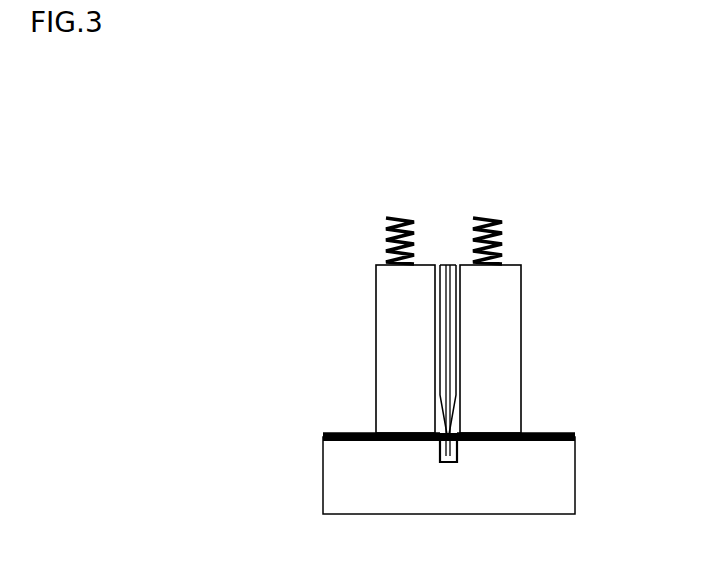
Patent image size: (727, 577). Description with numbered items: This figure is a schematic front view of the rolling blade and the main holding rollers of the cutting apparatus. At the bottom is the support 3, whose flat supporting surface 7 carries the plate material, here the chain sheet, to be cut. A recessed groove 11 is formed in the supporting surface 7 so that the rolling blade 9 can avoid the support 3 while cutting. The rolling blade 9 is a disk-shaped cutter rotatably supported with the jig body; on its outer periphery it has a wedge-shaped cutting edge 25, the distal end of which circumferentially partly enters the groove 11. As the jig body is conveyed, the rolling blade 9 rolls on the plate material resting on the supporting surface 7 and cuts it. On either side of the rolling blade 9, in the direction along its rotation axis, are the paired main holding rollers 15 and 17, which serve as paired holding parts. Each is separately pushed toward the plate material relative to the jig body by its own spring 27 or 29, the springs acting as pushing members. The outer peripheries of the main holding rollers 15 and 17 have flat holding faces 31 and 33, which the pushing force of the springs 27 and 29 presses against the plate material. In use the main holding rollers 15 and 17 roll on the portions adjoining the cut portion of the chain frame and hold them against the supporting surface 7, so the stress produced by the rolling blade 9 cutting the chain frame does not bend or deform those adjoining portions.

The support 3 is at (558, 468).
The supporting surface 7 is at (327, 432).
The rolling blade 9 is at (447, 265).
The groove 11 is at (447, 463).
The main holding roller 15 is at (400, 316).
The main holding roller 17 is at (498, 301).
The cutting edge 25 is at (457, 415).
The spring 27 is at (399, 217).
The spring 29 is at (500, 217).
The holding face 31 is at (383, 441).
The holding face 33 is at (493, 441).